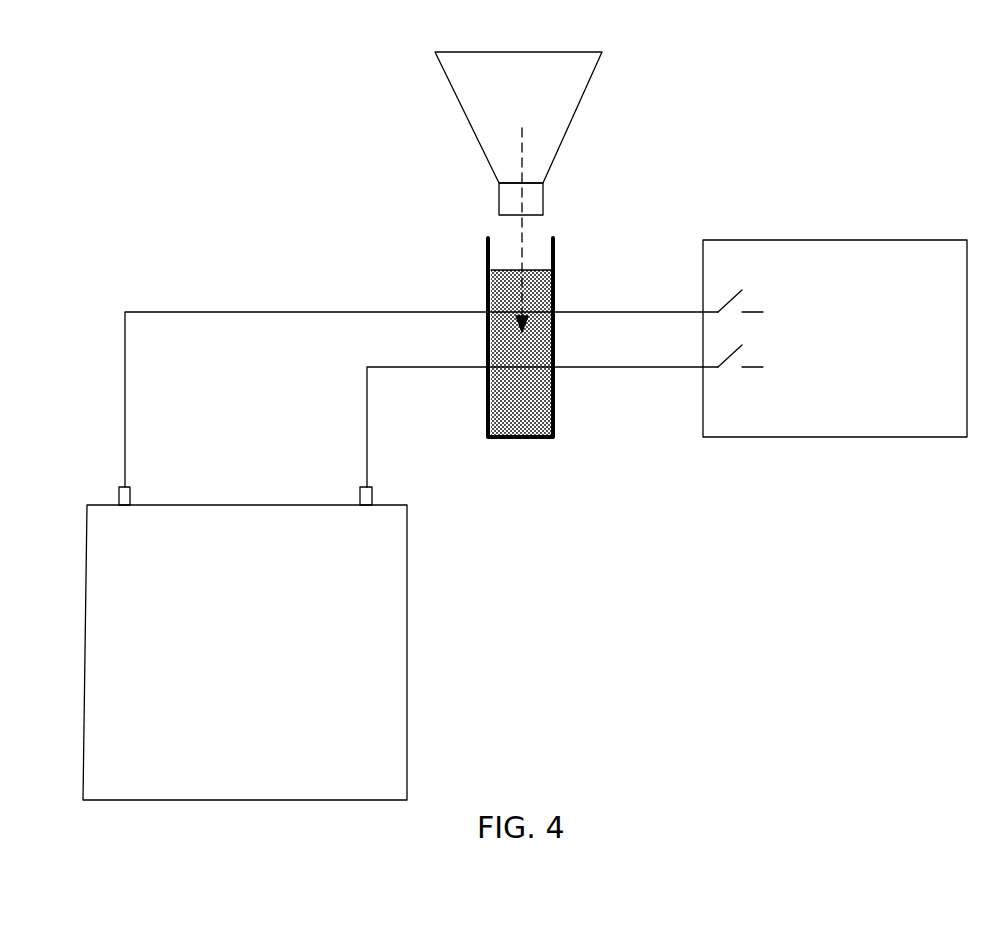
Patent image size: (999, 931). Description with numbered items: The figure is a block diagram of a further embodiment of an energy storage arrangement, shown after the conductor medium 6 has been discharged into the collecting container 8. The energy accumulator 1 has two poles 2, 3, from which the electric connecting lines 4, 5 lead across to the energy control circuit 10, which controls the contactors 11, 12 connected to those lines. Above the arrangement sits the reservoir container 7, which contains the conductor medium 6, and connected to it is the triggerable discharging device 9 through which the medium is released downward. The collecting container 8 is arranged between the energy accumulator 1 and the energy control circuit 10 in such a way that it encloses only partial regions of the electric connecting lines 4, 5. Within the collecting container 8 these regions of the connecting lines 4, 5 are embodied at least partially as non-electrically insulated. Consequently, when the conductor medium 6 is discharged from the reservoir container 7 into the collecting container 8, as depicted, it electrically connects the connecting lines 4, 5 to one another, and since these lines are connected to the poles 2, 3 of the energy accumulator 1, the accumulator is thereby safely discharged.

The energy accumulator 1 is at (375, 650).
The pole 2 is at (120, 487).
The pole 3 is at (365, 487).
The electric connecting line 4 is at (421, 381).
The electric connecting line 5 is at (542, 427).
The conductor medium 6 is at (510, 410).
The reservoir container 7 is at (445, 72).
The collecting container 8 is at (557, 425).
The triggerable discharging device 9 is at (505, 193).
The energy control circuit 10 is at (860, 265).
The contactor 11 is at (738, 279).
The contactor 12 is at (739, 377).